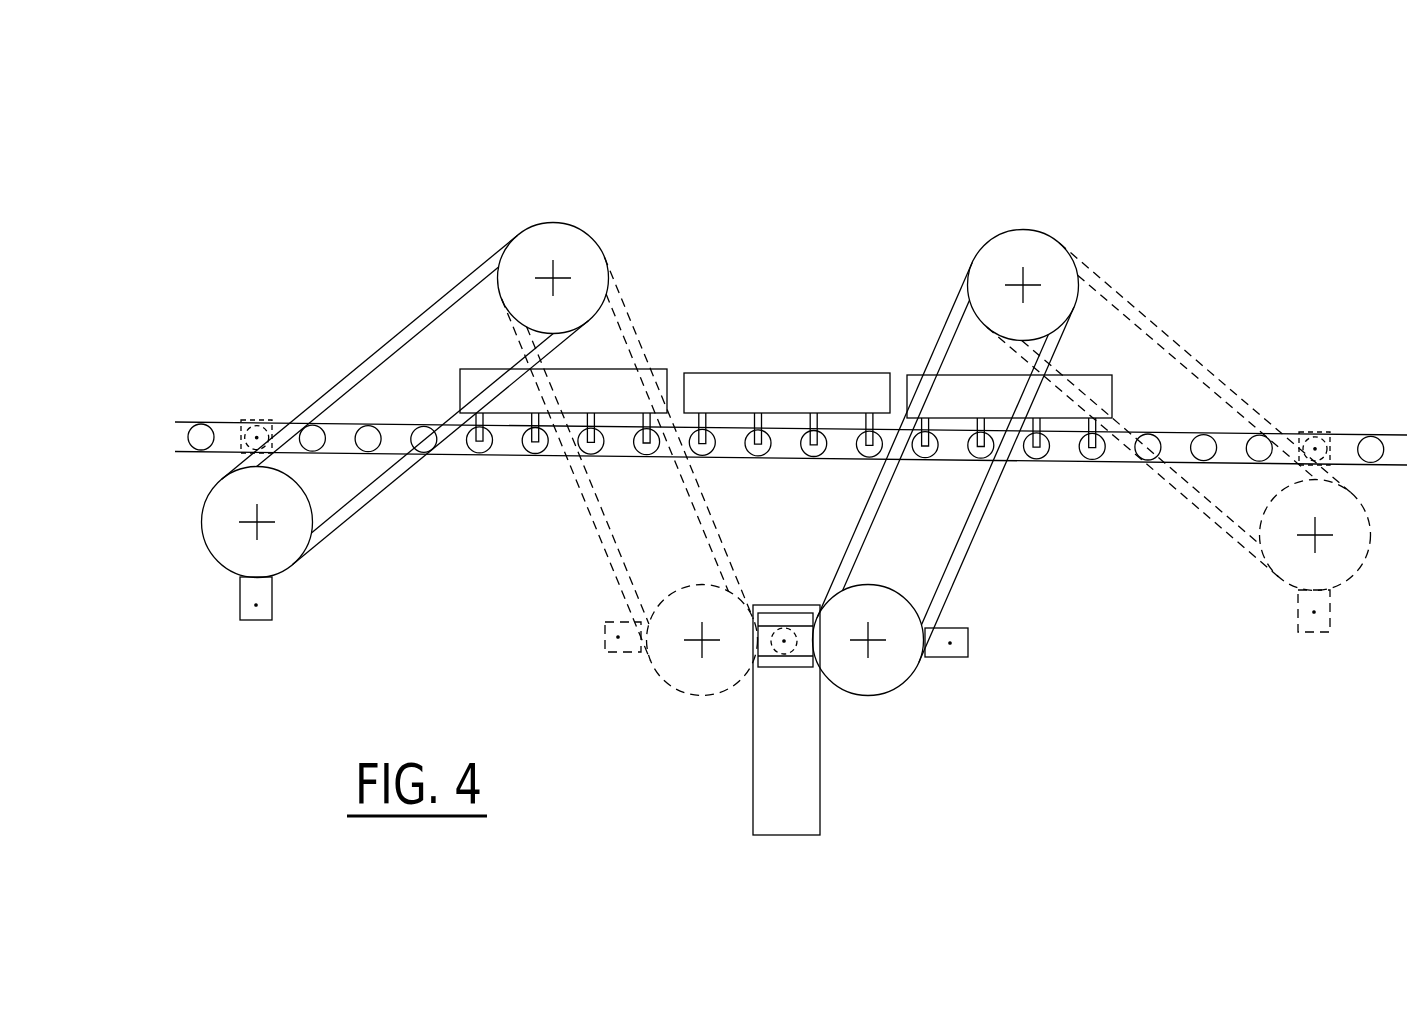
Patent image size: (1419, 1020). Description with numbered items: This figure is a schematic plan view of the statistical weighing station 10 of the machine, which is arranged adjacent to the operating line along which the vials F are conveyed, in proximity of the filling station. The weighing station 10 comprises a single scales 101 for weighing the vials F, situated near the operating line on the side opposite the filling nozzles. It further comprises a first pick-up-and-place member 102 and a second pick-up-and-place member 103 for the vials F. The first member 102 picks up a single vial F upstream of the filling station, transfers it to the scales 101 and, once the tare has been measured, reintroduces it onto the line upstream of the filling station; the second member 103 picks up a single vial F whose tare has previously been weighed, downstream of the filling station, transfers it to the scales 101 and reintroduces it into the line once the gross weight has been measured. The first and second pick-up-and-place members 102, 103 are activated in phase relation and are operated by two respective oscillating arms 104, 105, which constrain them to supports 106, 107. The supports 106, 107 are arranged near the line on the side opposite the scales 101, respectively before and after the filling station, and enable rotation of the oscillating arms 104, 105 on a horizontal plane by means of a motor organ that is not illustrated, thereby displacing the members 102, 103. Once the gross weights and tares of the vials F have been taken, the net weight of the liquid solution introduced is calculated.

The statistical weighing station 10 is at (880, 799).
The scales 101 is at (794, 598).
The first pick-up-and-place member 102 is at (205, 553).
The second pick-up-and-place member 103 is at (913, 696).
The oscillating arm 104 is at (380, 352).
The oscillating arm 105 is at (935, 352).
The support 106 is at (548, 212).
The support 107 is at (1027, 215).
The vials F is at (198, 432).